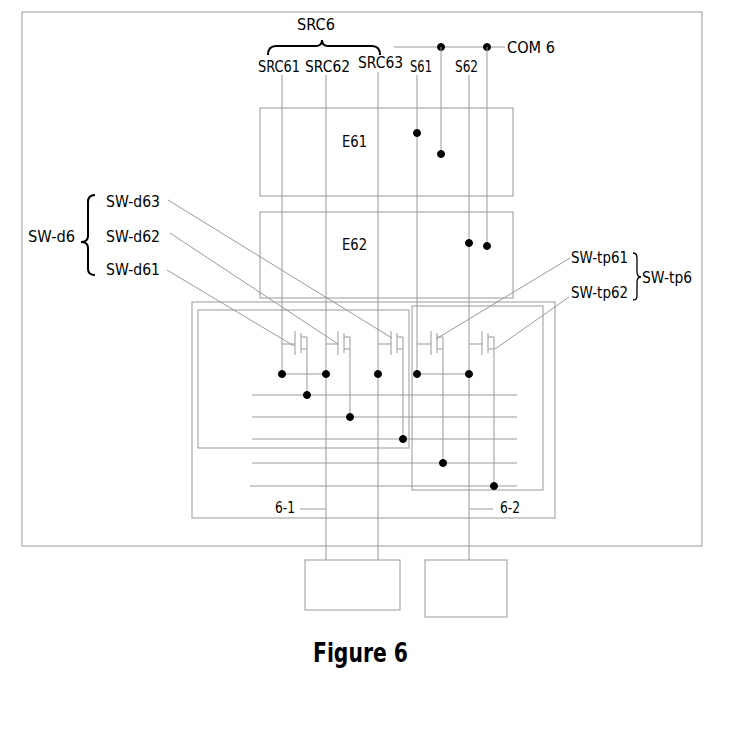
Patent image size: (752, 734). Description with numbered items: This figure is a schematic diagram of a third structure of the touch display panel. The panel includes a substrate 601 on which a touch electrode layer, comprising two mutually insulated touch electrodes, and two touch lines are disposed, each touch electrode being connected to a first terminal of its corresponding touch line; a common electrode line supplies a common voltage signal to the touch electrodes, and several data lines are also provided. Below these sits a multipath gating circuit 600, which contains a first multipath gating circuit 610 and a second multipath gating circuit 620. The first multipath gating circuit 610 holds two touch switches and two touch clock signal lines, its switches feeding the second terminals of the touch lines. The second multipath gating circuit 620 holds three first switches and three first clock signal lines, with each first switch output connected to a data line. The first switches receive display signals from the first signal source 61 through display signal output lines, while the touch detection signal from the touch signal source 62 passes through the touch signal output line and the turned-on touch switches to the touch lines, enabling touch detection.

The substrate 601 is at (58, 12).
The multipath gating circuit 600 is at (192, 412).
The second multipath gating circuit 620 is at (198, 357).
The first multipath gating circuit 610 is at (543, 400).
The first signal source 61 is at (352, 585).
The touch signal source 62 is at (466, 587).